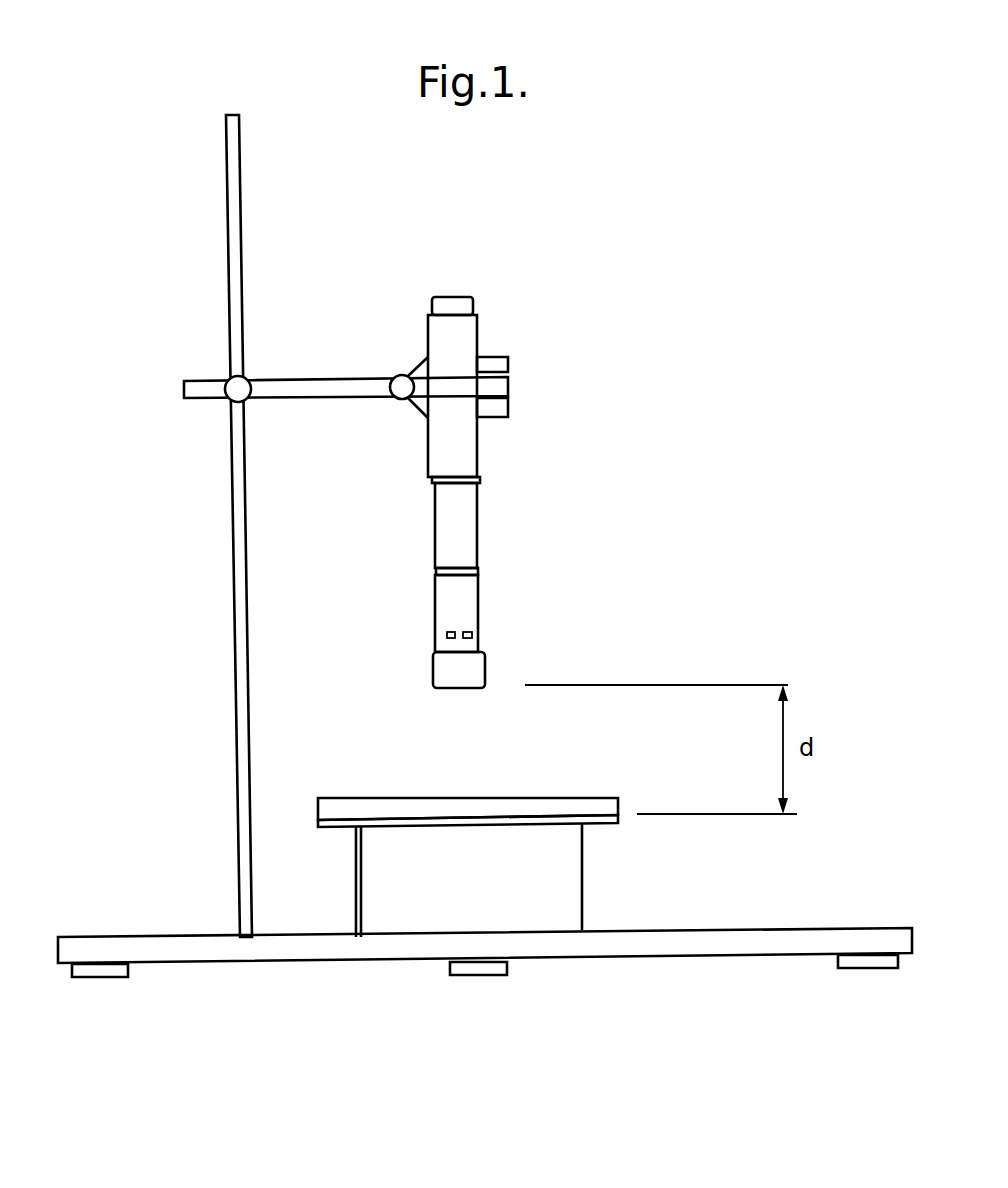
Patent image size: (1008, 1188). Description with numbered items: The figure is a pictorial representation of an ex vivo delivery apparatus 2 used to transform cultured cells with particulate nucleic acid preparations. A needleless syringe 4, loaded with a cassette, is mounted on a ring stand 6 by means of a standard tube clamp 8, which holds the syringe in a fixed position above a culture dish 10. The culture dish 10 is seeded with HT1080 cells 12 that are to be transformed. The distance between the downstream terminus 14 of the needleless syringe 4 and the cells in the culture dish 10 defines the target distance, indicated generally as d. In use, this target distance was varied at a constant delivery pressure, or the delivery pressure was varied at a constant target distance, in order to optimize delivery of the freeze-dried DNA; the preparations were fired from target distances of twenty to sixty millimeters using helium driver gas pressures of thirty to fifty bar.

The delivery apparatus 2 is at (192, 482).
The needleless syringe 4 is at (468, 532).
The ring stand 6 is at (240, 647).
The tube clamp 8 is at (351, 378).
The culture dish 10 is at (453, 808).
The HT1080 cells 12 is at (555, 818).
The downstream terminus 14 is at (500, 678).